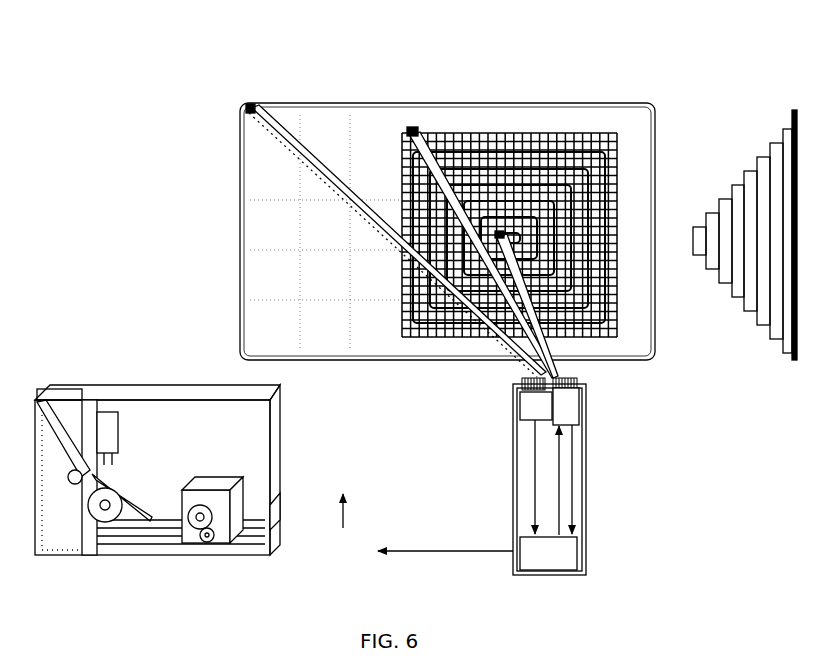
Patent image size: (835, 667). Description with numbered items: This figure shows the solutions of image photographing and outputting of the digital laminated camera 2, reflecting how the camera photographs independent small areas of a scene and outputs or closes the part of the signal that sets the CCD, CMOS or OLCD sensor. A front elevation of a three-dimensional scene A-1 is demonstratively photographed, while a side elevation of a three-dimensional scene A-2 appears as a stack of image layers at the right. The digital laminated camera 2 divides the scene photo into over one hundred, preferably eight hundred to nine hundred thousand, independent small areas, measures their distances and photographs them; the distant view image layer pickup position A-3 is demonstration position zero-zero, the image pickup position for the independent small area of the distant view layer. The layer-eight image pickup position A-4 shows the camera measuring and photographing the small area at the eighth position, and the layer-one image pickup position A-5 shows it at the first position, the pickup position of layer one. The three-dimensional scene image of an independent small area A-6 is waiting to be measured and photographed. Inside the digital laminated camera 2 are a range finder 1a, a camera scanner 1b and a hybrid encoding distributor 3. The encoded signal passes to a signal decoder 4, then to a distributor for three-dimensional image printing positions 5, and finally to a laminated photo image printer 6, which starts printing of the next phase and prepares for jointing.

The front elevation of a 3D scene A-1 is at (239, 162).
The side elevation of a 3D scene A-2 is at (766, 337).
The distant view image layer pickup position A-3 is at (789, 117).
The layer 8 image pickup position A-4 is at (776, 132).
The layer 1 image pickup position A-5 is at (598, 212).
The 3D scene image of independent small area A-6 is at (270, 245).
The range finder 1a is at (533, 404).
The camera scanner 1b is at (567, 408).
The digital laminated camera 2 is at (587, 489).
The hybrid encoding distributor 3 is at (548, 553).
The signal decoder 4 is at (414, 529).
The distributor for 3D image printing positions 5 is at (283, 474).
The laminated photo image printer 6 is at (283, 403).